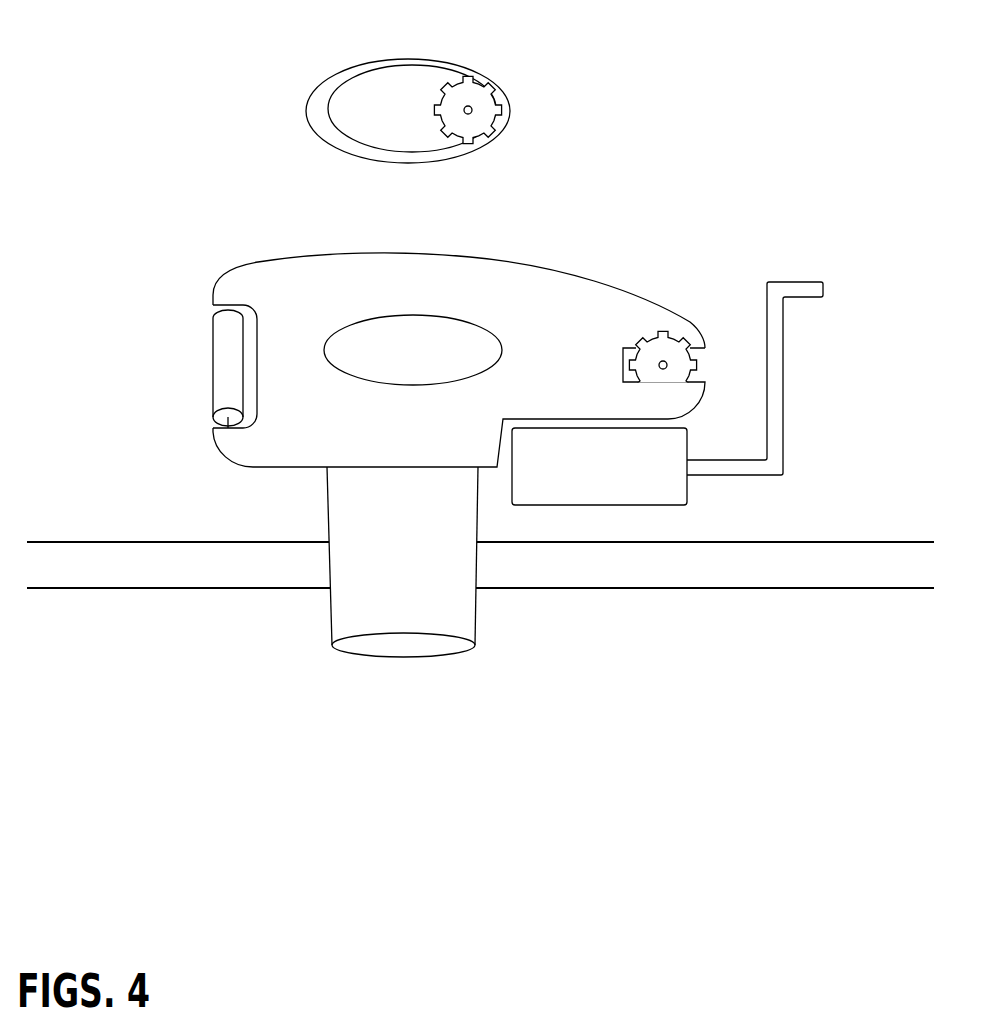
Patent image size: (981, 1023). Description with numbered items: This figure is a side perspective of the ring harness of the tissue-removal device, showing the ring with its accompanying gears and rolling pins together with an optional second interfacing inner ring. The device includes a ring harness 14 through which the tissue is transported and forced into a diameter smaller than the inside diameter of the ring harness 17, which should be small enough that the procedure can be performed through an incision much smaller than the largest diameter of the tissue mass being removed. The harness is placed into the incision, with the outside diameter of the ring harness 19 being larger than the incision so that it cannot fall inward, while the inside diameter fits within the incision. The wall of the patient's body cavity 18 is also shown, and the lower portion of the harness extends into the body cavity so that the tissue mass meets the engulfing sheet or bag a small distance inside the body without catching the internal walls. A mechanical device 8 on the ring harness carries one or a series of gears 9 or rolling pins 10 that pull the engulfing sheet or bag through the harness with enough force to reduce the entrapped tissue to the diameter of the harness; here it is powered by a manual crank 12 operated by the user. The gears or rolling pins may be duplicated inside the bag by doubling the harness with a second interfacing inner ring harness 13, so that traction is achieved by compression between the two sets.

The mechanical device 8 is at (599, 466).
The gears 9 is at (675, 337).
The rolling pins 10 is at (189, 369).
The manual crank 12 is at (777, 350).
The second interfacing inner ring harness 13 is at (495, 89).
The ring harness 14 is at (459, 360).
The inside diameter of the ring harness 17 is at (457, 645).
The wall of the patient's body cavity 18 is at (480, 565).
The outside diameter of the ring harness 19 is at (687, 187).